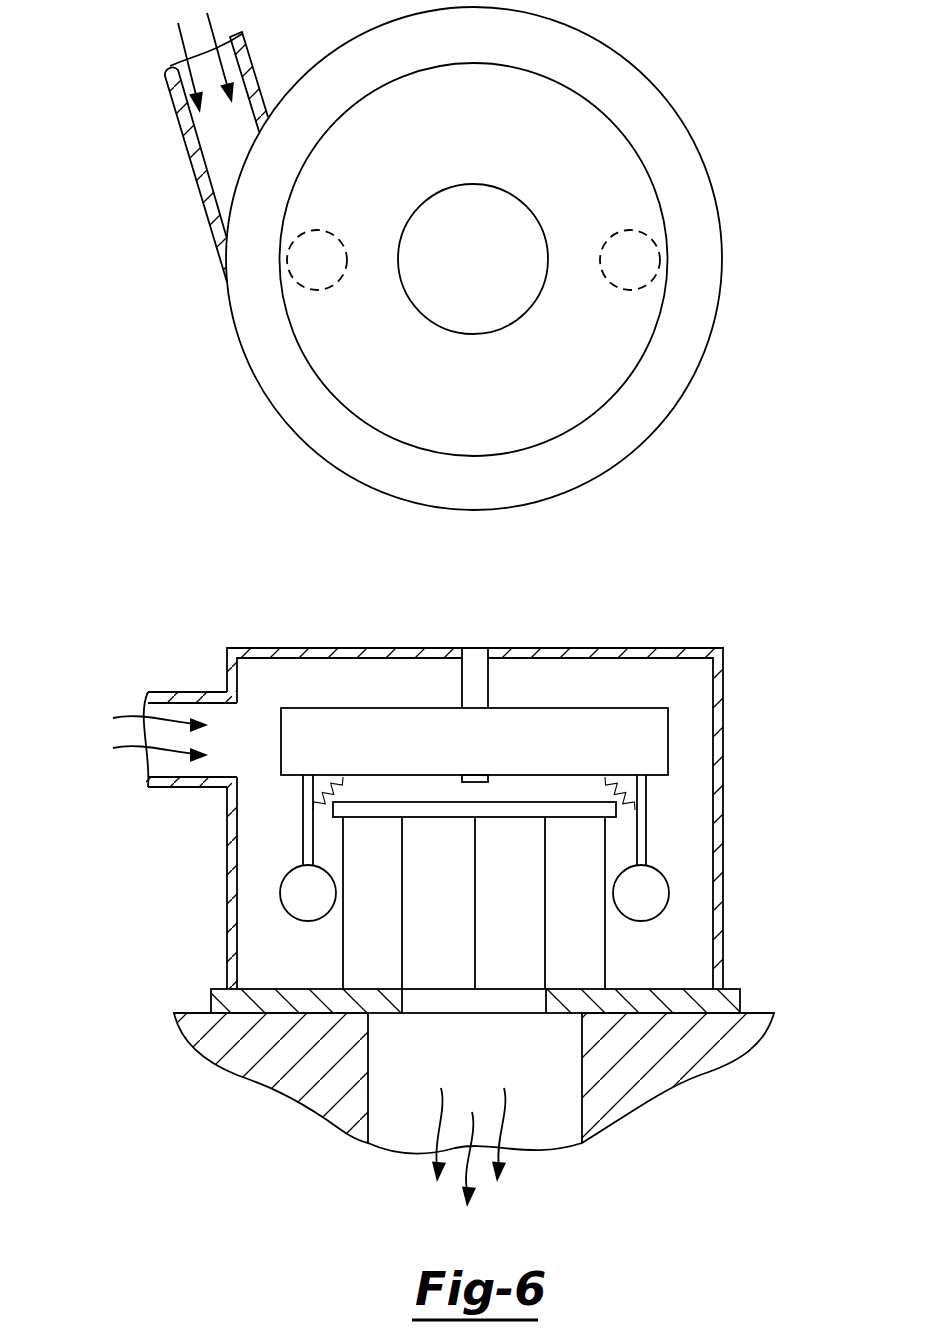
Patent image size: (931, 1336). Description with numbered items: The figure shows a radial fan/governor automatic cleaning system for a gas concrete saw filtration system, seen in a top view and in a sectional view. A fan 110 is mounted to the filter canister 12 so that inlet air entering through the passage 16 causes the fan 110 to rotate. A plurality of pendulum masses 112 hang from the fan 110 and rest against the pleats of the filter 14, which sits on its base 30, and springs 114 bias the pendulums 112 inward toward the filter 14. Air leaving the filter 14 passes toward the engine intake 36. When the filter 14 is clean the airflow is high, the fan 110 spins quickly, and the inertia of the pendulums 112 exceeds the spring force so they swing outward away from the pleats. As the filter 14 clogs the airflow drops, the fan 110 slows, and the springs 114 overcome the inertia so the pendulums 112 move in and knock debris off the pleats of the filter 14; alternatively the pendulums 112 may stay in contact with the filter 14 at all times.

The filter canister 12 is at (723, 702).
The filter 14 is at (587, 947).
The passage 16 is at (170, 84).
The base 30 is at (257, 988).
The engine intake 36 is at (368, 1113).
The fan 110 is at (645, 398).
The pendulum masses 112 is at (293, 883).
The springs 114 is at (310, 788).